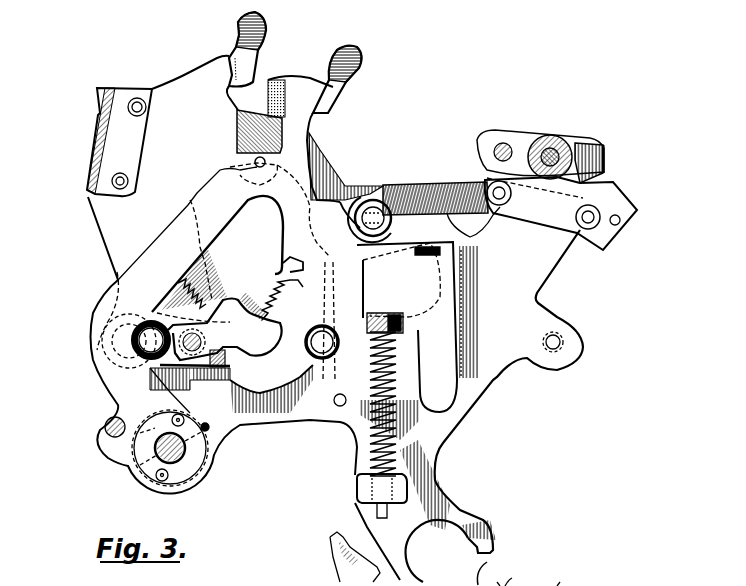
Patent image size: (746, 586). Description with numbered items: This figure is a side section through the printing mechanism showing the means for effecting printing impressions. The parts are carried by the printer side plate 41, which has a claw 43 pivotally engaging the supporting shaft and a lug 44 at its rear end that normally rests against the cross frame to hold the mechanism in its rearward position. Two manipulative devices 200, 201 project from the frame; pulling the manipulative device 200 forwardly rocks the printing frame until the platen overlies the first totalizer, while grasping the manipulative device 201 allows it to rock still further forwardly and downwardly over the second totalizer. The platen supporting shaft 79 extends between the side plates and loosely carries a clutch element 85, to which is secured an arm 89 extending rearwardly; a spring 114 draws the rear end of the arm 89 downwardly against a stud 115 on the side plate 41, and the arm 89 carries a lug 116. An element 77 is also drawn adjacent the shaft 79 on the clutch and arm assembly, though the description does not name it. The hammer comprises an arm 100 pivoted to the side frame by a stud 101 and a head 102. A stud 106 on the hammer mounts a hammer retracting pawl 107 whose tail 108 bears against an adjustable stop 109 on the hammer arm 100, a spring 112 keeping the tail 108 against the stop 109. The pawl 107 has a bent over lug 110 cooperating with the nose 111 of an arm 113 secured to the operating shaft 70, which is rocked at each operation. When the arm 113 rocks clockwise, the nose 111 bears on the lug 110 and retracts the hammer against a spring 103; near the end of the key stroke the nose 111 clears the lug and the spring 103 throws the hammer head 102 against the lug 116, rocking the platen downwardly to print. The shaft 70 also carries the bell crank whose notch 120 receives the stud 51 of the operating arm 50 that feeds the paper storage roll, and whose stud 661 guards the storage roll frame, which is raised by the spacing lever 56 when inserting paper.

The side plate 41 is at (560, 278).
The claw 43 is at (437, 551).
The lug 44 is at (97, 92).
The operating arm 50 is at (497, 580).
The stud 51 is at (518, 579).
The spacing lever 56 is at (345, 548).
The stud 661 is at (557, 585).
The operating shaft 70 is at (177, 457).
The pin 77 is at (506, 143).
The platen supporting shaft 79 is at (553, 135).
The clutch element 85 is at (592, 155).
The arm 89 is at (452, 195).
The hammer arm 100 is at (193, 387).
The stud 101 is at (147, 343).
The hammer head 102 is at (447, 260).
The spring 103 is at (395, 420).
The stud 106 is at (307, 390).
The hammer retracting pawl 107 is at (231, 342).
The tail 108 is at (233, 367).
The adjustable stop 109 is at (207, 290).
The lug 110 is at (340, 257).
The nose 111 is at (285, 262).
The spring 112 is at (278, 293).
The arm 113 is at (200, 239).
The spring 114 is at (318, 218).
The stud 115 is at (255, 162).
The lug 116 is at (368, 246).
The notch 120 is at (492, 571).
The manipulative device 200 is at (263, 28).
The manipulative device 201 is at (361, 57).